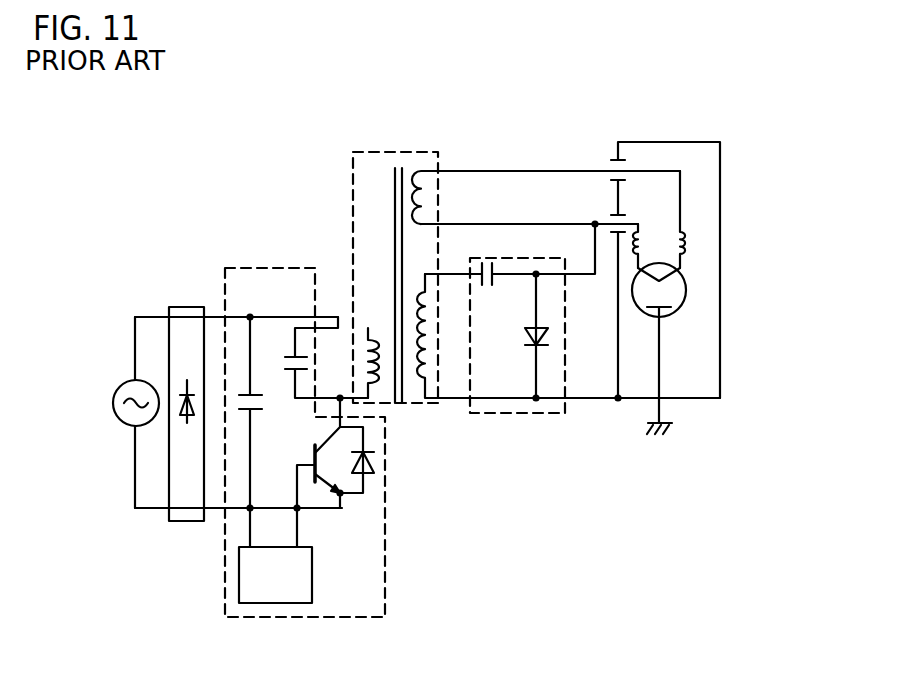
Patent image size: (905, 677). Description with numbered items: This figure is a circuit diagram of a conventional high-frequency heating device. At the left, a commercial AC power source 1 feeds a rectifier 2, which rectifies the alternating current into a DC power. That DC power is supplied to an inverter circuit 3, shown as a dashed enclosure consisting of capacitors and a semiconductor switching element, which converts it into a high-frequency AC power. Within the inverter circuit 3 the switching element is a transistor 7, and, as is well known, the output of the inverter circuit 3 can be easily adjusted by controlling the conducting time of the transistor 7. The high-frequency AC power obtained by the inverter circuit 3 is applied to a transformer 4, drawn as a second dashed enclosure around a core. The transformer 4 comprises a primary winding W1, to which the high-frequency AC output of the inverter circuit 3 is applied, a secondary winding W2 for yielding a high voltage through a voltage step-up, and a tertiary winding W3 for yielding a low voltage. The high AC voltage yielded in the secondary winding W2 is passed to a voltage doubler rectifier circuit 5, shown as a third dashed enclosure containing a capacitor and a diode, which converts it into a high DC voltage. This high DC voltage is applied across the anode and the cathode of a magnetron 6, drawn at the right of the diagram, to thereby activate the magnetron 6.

The commercial AC power source 1 is at (113, 408).
The rectifier 2 is at (183, 306).
The inverter circuit 3 is at (305, 417).
The transformer 4 is at (535, 286).
The voltage doubler rectifier circuit 5 is at (512, 413).
The magnetron 6 is at (720, 290).
The transistor 7 is at (340, 493).
The primary winding W1 is at (378, 382).
The secondary winding W2 is at (432, 363).
The tertiary winding W3 is at (432, 181).